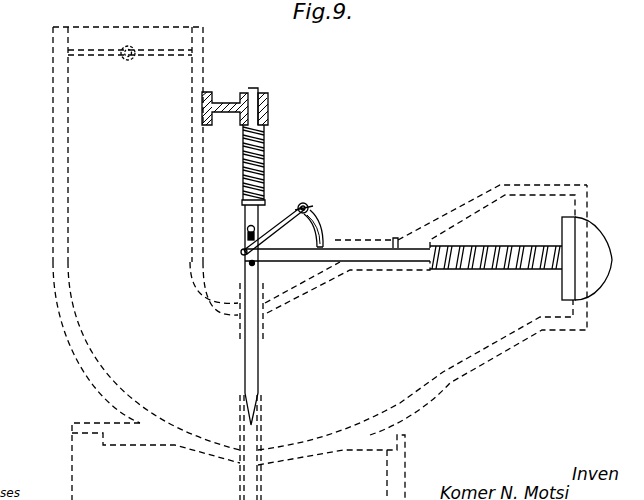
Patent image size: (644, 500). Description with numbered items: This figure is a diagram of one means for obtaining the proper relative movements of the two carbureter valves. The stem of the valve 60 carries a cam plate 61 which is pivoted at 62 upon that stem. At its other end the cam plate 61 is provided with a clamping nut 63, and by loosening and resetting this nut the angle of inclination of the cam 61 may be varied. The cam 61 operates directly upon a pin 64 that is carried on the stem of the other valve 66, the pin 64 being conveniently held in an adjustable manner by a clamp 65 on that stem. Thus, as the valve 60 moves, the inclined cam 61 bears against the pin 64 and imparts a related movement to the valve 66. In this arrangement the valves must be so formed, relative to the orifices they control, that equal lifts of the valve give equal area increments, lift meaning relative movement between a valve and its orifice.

The valve 60 is at (565, 272).
The cam plate 61 is at (274, 230).
The pivot 62 is at (241, 252).
The clamping nut 63 is at (309, 211).
The pin 64 is at (248, 238).
The clamp 65 is at (256, 236).
The valve 66 is at (258, 366).